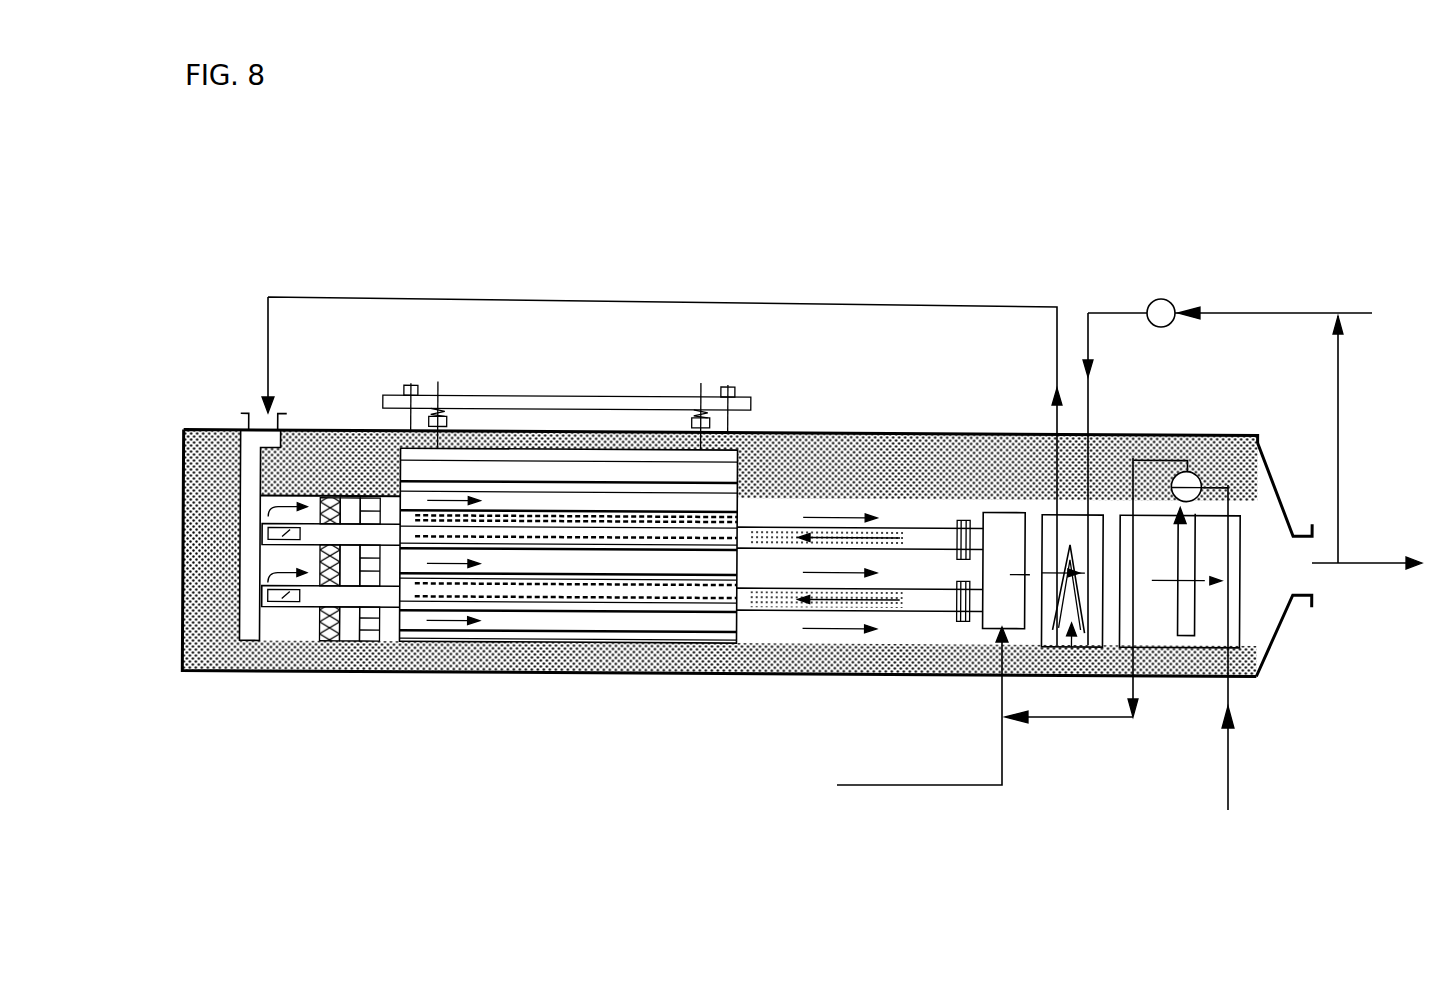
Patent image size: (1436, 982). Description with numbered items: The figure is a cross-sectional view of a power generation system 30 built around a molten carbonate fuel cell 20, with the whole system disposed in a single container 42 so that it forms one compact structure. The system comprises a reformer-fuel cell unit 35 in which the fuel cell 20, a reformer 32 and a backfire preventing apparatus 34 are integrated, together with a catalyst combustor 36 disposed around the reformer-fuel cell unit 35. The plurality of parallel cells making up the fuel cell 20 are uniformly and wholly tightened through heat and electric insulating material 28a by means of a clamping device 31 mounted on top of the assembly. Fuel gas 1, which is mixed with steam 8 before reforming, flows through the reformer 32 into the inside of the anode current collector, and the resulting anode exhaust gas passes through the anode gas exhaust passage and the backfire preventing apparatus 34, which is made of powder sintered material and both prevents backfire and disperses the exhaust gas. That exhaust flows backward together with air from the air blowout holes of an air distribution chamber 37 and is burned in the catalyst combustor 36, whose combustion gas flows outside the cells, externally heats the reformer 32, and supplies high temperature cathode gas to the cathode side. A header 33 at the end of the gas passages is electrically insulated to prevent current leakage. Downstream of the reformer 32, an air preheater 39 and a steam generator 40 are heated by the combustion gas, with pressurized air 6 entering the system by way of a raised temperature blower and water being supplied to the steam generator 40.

The fuel gas 1 is at (885, 788).
The pressurized air 6 is at (318, 295).
The steam 8 is at (1098, 722).
The molten carbonate fuel cell 20 is at (572, 630).
The heat and electric insulating material 28a is at (512, 618).
The power generation system 30 is at (933, 254).
The clamping device 31 is at (586, 386).
The reformer 32 is at (774, 622).
The header 33 is at (997, 527).
The backfire preventing apparatus 34 is at (280, 603).
The reformer-fuel cell unit 35 is at (793, 505).
The catalyst combustor 36 is at (372, 633).
The air distribution chamber 37 is at (250, 465).
The air preheater 39 is at (1067, 680).
The steam generator 40 is at (1170, 638).
The single container 42 is at (1210, 435).